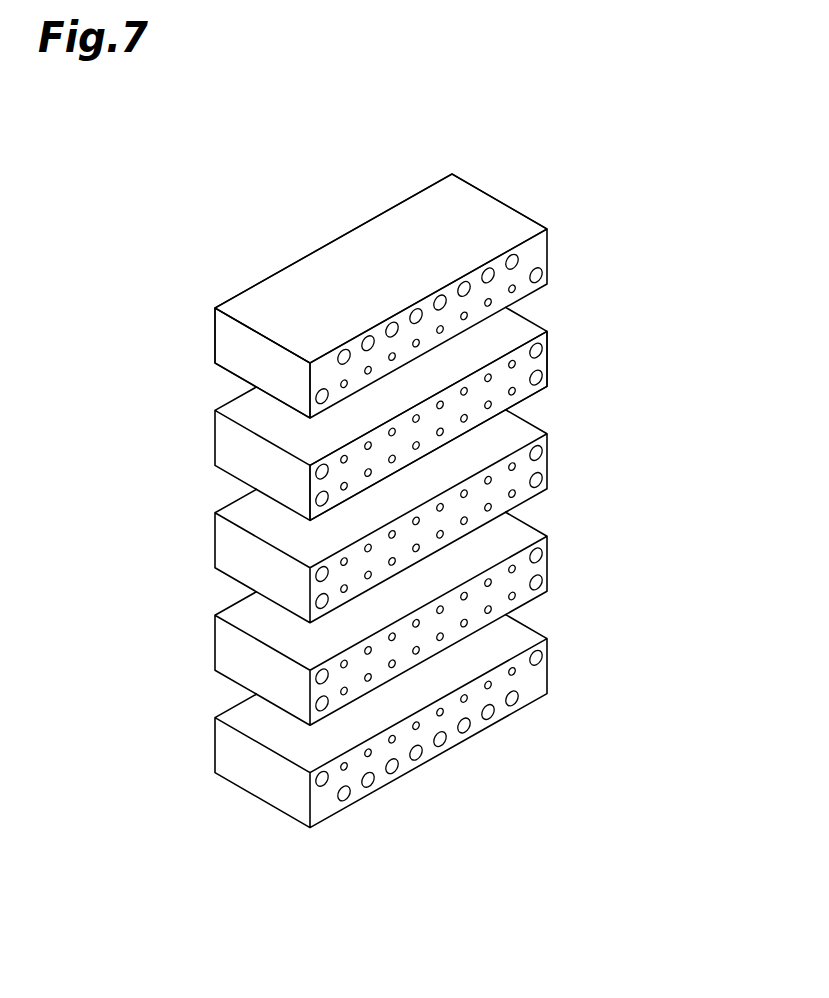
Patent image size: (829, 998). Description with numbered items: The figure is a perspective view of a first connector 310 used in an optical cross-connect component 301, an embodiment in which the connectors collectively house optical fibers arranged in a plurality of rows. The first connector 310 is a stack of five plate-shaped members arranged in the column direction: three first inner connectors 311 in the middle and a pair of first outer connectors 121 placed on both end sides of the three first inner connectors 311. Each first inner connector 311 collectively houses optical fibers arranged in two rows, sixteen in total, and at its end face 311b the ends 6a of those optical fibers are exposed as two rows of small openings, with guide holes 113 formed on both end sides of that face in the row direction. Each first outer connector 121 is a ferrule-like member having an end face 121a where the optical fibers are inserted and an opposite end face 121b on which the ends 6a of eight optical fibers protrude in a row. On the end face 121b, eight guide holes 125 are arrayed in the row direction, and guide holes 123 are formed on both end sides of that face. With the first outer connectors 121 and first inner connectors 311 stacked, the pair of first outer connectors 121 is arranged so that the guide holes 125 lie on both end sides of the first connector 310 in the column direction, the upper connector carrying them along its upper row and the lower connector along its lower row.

The optical cross-connect component 301 is at (670, 145).
The first outer connector 121 is at (548, 263).
The end face 121a is at (214, 330).
The end face 121b is at (327, 352).
The guide holes 123 is at (329, 392).
The guide holes 125 is at (337, 358).
The first connector 310 is at (653, 277).
The first inner connector 311 is at (548, 358).
The end face 311b is at (337, 490).
The guide holes 113 is at (534, 357).
The ends of optical fibers 6a is at (487, 300).